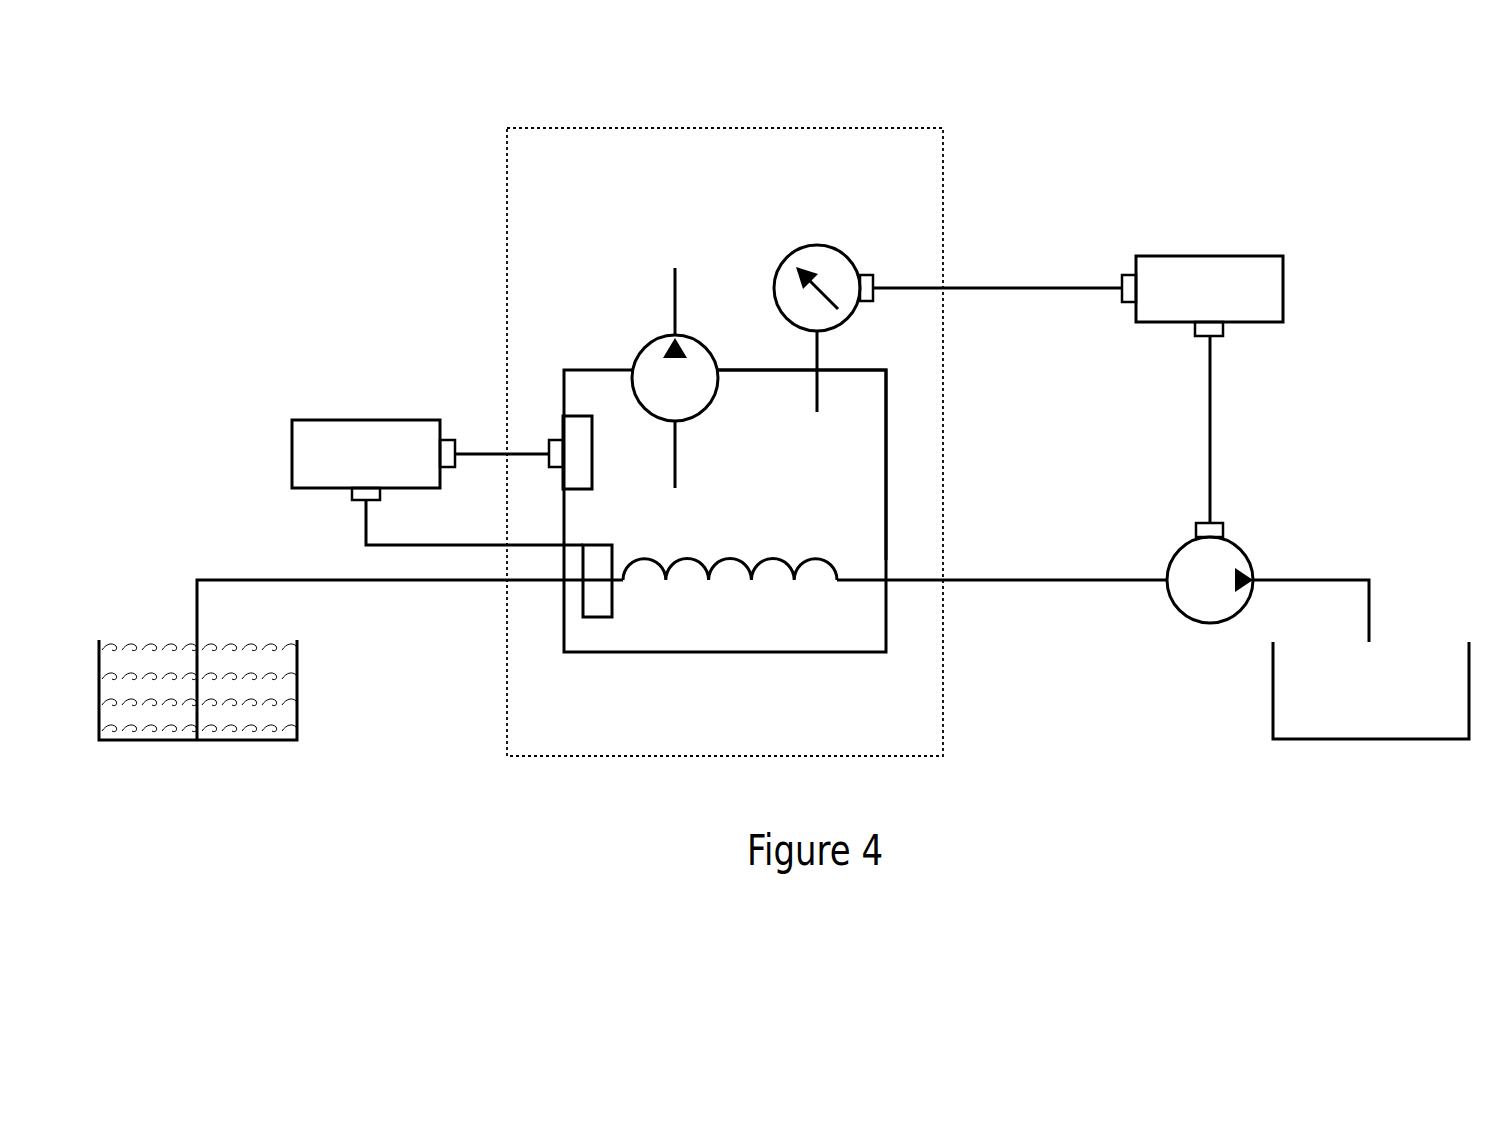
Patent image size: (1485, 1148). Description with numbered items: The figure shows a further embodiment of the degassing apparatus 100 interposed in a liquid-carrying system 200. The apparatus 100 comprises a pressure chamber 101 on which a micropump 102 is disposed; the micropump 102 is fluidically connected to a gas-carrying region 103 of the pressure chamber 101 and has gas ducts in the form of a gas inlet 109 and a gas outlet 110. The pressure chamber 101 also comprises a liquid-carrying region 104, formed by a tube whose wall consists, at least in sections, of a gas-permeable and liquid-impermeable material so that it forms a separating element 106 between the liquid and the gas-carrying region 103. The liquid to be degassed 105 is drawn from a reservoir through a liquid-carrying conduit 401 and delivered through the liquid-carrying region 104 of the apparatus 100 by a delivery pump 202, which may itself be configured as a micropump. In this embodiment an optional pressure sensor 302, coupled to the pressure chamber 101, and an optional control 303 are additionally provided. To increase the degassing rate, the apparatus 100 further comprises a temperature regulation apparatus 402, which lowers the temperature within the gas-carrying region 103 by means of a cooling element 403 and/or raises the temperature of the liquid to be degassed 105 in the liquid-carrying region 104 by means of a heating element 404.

The apparatus 100 is at (588, 226).
The pressure chamber 101 is at (833, 652).
The micropump 102 is at (695, 338).
The gas-carrying region 103 is at (858, 473).
The liquid-carrying region 104 is at (708, 580).
The liquid to be degassed 105 is at (142, 645).
The separating element 106 is at (665, 581).
The gas inlet 109 is at (676, 458).
The gas outlet 110 is at (674, 292).
The liquid-carrying system 200 is at (218, 292).
The delivery pump 202 is at (1210, 623).
The pressure sensor 302 is at (815, 245).
The control 303 is at (1205, 256).
The liquid-carrying conduit 401 is at (420, 583).
The temperature regulation apparatus 402 is at (364, 420).
The cooling element 403 is at (578, 415).
The heating element 404 is at (598, 618).